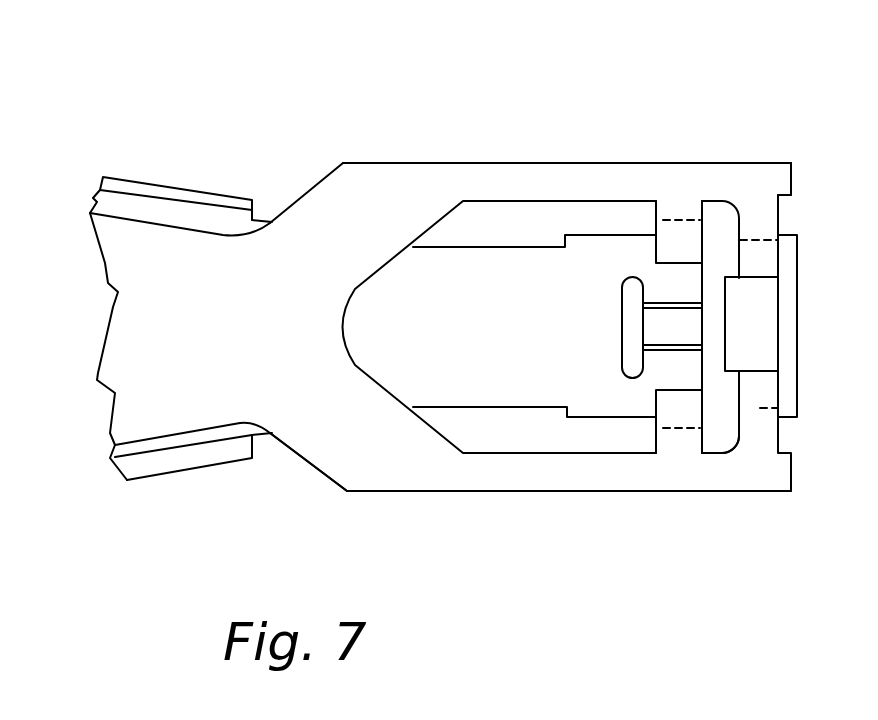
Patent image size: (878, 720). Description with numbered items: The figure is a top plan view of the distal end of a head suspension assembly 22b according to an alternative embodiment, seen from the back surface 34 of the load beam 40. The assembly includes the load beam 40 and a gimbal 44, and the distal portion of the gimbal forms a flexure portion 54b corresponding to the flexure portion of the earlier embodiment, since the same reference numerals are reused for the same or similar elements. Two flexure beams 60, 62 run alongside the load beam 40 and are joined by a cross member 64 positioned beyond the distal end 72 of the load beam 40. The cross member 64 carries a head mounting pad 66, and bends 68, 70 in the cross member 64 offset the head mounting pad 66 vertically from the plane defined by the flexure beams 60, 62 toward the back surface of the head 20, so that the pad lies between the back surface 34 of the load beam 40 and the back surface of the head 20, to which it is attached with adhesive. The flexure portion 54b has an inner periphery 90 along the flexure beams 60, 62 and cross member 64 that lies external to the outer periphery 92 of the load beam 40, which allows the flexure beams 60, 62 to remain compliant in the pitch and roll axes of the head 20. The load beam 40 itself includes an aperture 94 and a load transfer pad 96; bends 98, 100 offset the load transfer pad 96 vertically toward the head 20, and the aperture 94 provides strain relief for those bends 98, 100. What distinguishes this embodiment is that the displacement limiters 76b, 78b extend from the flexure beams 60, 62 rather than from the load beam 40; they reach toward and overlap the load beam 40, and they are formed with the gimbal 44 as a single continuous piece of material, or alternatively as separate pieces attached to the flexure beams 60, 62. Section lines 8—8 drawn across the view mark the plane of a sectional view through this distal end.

The head suspension assembly 22b is at (145, 131).
The load beam 40 is at (219, 192).
The gimbal 44 is at (122, 310).
The housing 54b is at (407, 163).
The flexure beam 60 is at (518, 177).
The flexure beam 62 is at (467, 478).
The back surface 34 is at (390, 363).
The inner periphery 90 is at (397, 257).
The outer periphery 92 is at (450, 250).
The displacement limiter 76b is at (654, 213).
The displacement limiter 78b is at (653, 440).
The cross member 64 is at (779, 218).
The bend 68 is at (757, 257).
The head 20 is at (798, 273).
The head mounting pad 66 is at (753, 307).
The bend 70 is at (762, 387).
The distal end 72 is at (707, 393).
The aperture 94 is at (622, 303).
The load transfer pad 96 is at (663, 325).
The bend 98 is at (667, 303).
The bend 100 is at (663, 352).
The section lines 8— 8 is at (712, 142).